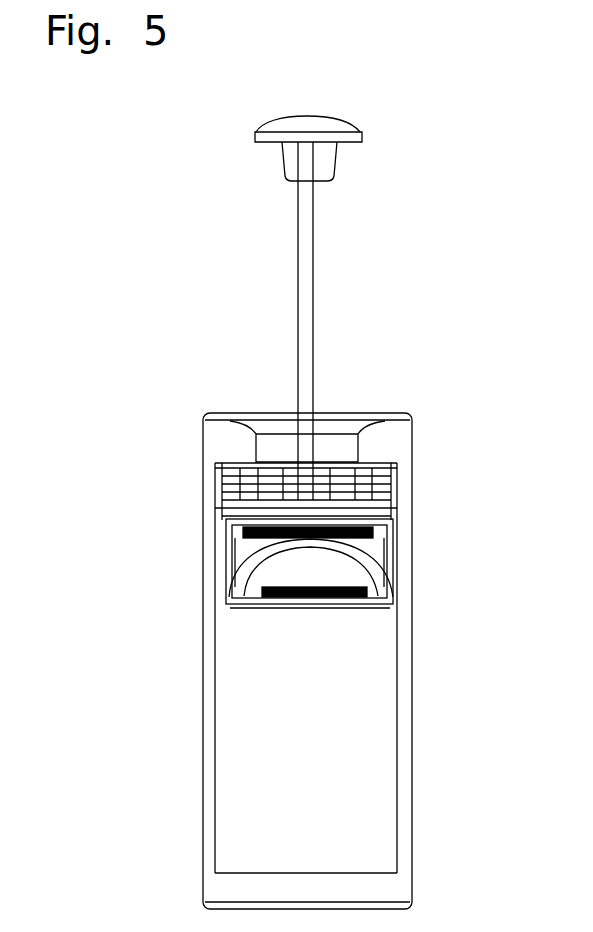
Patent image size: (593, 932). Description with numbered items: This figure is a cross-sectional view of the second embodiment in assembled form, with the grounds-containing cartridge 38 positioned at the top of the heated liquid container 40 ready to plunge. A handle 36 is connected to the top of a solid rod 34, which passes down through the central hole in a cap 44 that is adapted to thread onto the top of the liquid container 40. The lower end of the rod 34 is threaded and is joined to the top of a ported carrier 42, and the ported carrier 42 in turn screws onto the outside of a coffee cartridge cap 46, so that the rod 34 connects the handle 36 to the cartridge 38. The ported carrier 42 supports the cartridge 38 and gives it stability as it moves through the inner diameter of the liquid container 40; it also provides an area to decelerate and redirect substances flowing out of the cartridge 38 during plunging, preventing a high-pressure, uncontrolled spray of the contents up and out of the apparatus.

The handle 36 is at (345, 120).
The solid rod 34 is at (292, 268).
The cap 44 is at (202, 437).
The ported carrier 42 is at (400, 465).
The coffee cartridge cap 46 is at (400, 516).
The cartridge 38 is at (285, 576).
The liquid container 40 is at (412, 703).